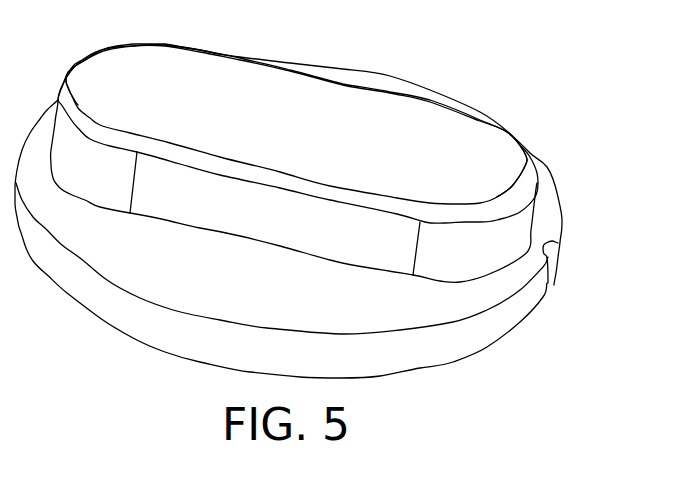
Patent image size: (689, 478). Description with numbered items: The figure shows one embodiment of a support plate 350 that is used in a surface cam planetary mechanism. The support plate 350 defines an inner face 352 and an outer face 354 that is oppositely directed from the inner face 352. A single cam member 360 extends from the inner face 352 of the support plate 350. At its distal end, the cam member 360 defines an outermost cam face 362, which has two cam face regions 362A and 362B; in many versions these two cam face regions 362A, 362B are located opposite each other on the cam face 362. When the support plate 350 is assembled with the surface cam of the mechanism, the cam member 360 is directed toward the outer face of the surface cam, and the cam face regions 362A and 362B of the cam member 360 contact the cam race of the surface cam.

The support plate 350 is at (540, 100).
The inner face 352 is at (252, 288).
The outer face 354 is at (428, 346).
The cam member 360 is at (217, 207).
The cam face 362 is at (337, 128).
The cam face region 362A is at (503, 157).
The cam face region 362B is at (85, 74).